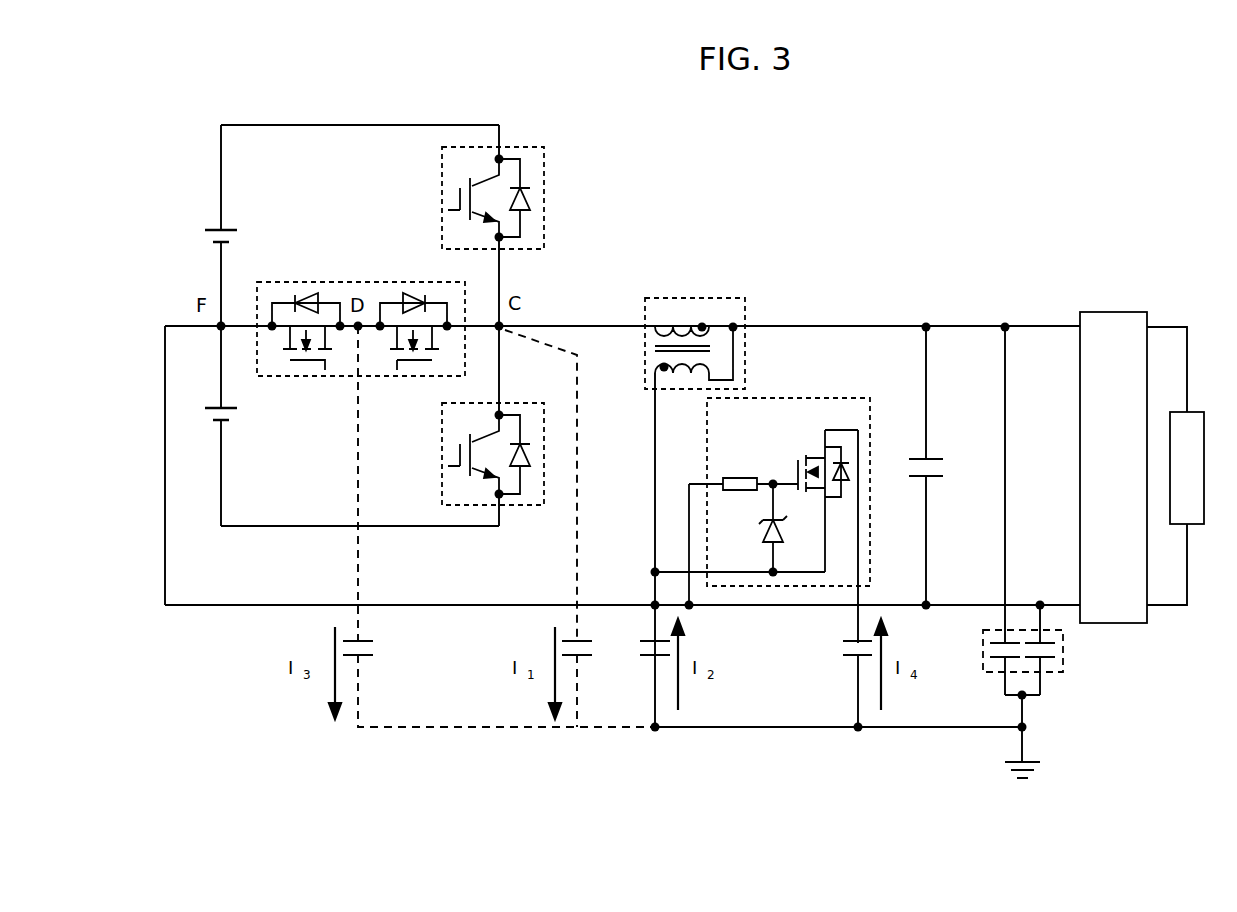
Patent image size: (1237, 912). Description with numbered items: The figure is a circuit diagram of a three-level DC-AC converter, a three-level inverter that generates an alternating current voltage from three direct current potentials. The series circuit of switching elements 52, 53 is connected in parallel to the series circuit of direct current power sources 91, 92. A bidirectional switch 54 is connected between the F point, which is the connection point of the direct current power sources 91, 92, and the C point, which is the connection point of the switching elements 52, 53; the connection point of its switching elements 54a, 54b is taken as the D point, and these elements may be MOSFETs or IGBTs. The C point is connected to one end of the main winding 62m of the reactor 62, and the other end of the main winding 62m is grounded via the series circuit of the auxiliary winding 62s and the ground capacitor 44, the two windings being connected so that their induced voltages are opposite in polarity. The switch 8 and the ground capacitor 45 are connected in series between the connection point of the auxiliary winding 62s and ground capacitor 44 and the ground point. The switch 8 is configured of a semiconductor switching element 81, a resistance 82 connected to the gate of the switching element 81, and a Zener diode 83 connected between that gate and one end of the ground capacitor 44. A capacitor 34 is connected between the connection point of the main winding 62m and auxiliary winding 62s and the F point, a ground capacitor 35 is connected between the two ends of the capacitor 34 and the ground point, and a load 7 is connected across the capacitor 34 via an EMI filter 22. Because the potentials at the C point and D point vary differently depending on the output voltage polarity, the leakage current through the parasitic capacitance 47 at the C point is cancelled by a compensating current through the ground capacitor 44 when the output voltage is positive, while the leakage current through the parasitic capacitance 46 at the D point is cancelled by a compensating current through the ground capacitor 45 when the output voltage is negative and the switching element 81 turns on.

The direct current power source 91 is at (212, 217).
The direct current power source 92 is at (211, 428).
The bidirectional switch 54 is at (361, 314).
The switching element 54a is at (296, 372).
The switching element 54b is at (415, 372).
The switching element 52 is at (547, 158).
The switching element 53 is at (520, 507).
The reactor 62 is at (691, 332).
The main winding 62m is at (683, 322).
The auxiliary winding 62s is at (682, 372).
The switch 8 is at (779, 490).
The semiconductor switching element 81 is at (793, 455).
The resistance 82 is at (735, 478).
The Zener diode 83 is at (756, 532).
The capacitor 34 is at (897, 470).
The EMI filter 22 is at (1112, 312).
The load 7 is at (1203, 417).
The ground capacitor 35 is at (984, 672).
The ground capacitor 44 is at (648, 665).
The ground capacitor 45 is at (850, 665).
The parasitic capacitance 46 is at (367, 664).
The parasitic capacitance 47 is at (584, 664).